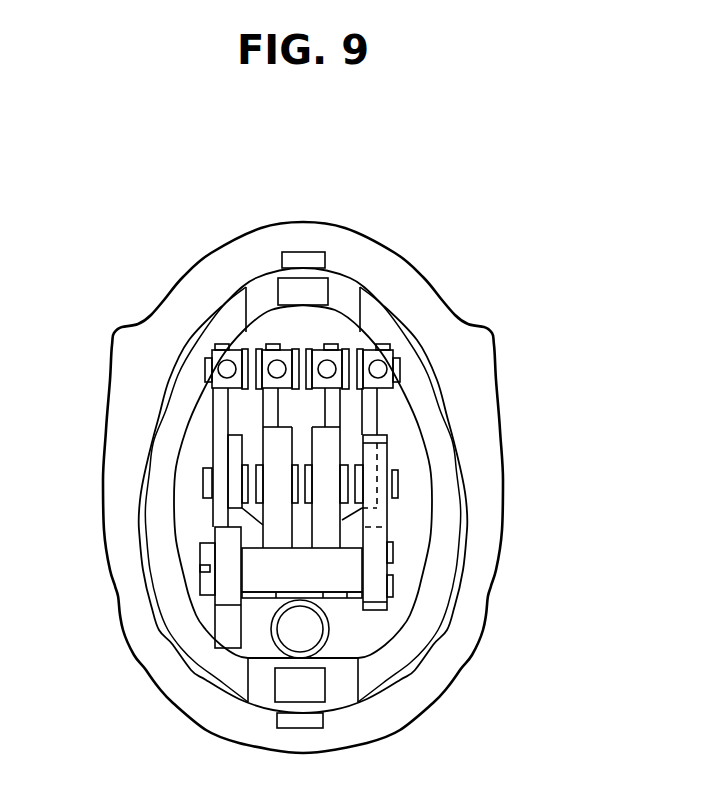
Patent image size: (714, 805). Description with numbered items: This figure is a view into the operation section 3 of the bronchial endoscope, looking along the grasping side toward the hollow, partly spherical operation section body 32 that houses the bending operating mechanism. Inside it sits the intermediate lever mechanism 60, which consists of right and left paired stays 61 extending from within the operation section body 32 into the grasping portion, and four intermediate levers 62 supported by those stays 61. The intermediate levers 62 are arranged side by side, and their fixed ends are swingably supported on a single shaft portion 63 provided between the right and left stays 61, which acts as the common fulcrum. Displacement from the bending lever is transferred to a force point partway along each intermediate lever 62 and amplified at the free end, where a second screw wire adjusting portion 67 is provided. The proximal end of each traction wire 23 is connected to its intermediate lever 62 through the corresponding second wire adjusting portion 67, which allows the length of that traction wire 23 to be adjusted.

The operation section 3 is at (582, 363).
The operation section body 32 is at (422, 279).
The intermediate lever mechanism 60 is at (412, 523).
The second wire adjusting portion 67 is at (336, 351).
The traction wire 23 is at (328, 369).
The intermediate lever 62 is at (332, 453).
The stay 61 is at (375, 580).
The shaft portion 63 is at (273, 582).